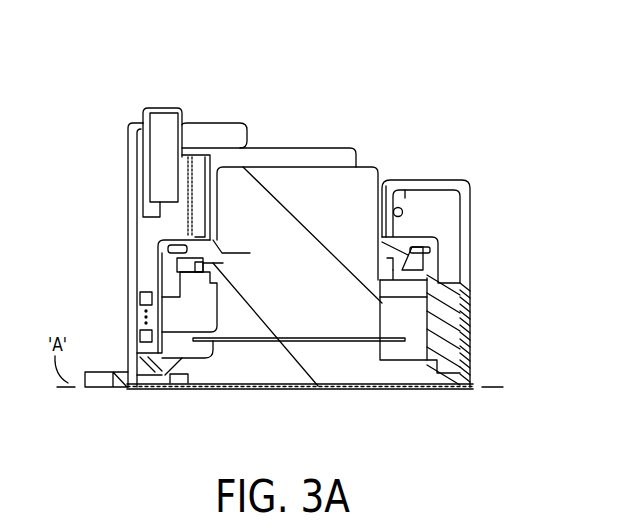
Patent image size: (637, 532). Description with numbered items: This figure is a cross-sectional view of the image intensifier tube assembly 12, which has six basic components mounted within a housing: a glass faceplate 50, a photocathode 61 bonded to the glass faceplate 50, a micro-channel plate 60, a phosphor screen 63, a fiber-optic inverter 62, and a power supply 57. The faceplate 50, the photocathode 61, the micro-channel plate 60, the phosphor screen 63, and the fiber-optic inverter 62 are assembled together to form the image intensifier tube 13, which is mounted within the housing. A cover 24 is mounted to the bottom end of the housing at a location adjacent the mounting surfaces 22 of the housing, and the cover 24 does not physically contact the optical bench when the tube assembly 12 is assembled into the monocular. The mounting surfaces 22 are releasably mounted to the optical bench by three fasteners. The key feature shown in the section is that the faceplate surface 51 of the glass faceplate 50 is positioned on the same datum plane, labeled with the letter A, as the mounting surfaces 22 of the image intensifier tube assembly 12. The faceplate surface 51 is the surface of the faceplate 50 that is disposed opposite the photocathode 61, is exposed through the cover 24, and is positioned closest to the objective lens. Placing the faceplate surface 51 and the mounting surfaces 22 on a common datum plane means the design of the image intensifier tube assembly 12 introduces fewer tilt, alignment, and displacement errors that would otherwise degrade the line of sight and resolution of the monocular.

The image intensifier tube assembly 12 is at (80, 66).
The image intensifier tube 13 is at (265, 218).
The fiber-optic inverter 62 is at (358, 182).
The phosphor screen 63 is at (180, 243).
The micro-channel plate 60 is at (250, 337).
The photocathode 61 is at (238, 344).
The power supply 57 is at (452, 332).
The cover 24 is at (423, 392).
The glass faceplate 50 is at (353, 372).
The faceplate surface 51 is at (296, 384).
The mounting surfaces 22 is at (98, 389).